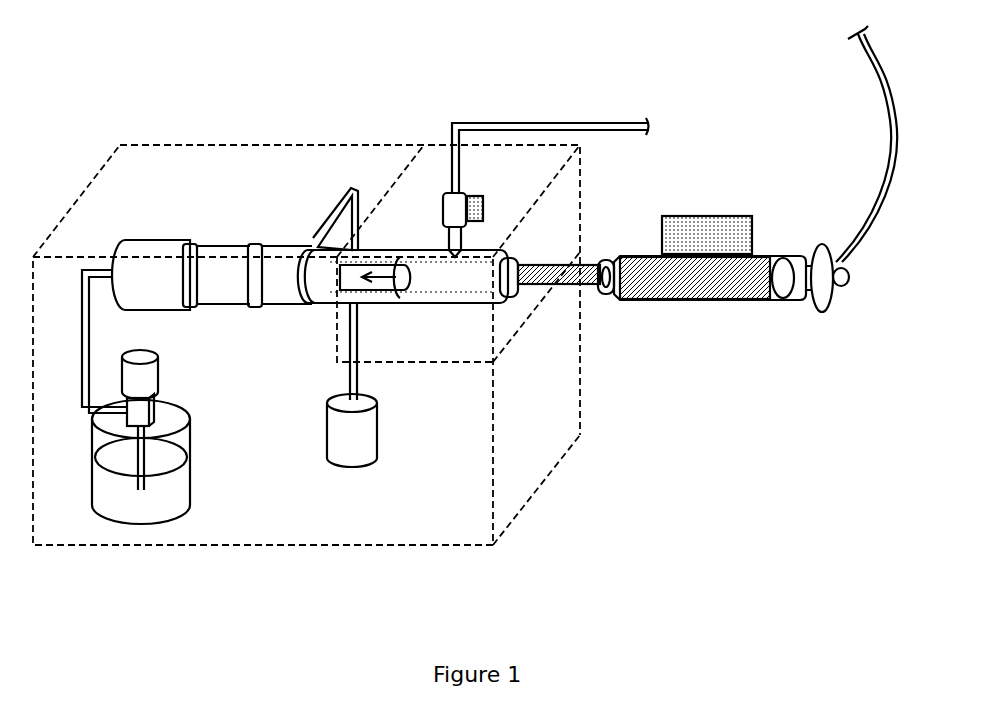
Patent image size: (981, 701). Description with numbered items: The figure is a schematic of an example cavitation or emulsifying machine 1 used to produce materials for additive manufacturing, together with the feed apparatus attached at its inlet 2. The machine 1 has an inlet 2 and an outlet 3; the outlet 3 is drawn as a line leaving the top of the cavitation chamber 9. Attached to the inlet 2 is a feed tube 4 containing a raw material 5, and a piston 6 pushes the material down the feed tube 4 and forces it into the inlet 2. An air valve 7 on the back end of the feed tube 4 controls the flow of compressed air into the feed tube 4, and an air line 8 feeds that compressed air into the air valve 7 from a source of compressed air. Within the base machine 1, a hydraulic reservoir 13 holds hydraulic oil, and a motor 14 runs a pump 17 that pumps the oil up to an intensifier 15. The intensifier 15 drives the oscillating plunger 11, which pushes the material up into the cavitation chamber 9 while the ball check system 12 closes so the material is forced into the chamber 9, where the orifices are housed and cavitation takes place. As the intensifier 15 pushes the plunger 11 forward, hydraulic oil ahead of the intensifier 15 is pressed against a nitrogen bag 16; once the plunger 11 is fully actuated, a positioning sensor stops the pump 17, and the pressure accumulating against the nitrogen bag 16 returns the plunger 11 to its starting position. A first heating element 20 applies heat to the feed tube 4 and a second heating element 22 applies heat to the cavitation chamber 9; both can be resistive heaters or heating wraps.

The cavitation machine 1 is at (287, 547).
The inlet 2 is at (572, 285).
The outlet 3 is at (615, 123).
The feed tube 4 is at (803, 302).
The raw material 5 is at (690, 292).
The piston 6 is at (778, 254).
The air valve 7 is at (849, 277).
The air line 8 is at (890, 124).
The cavitation chamber 9 is at (443, 211).
The oscillating plunger 11 is at (373, 303).
The ball check system 12 is at (518, 262).
The hydraulic reservoir 13 is at (176, 488).
The motor 14 is at (150, 378).
The intensifier 15 is at (312, 225).
The nitrogen bag 16 is at (370, 432).
The pump 17 is at (154, 409).
The first heating element 20 is at (686, 236).
The second heating element 22 is at (485, 207).